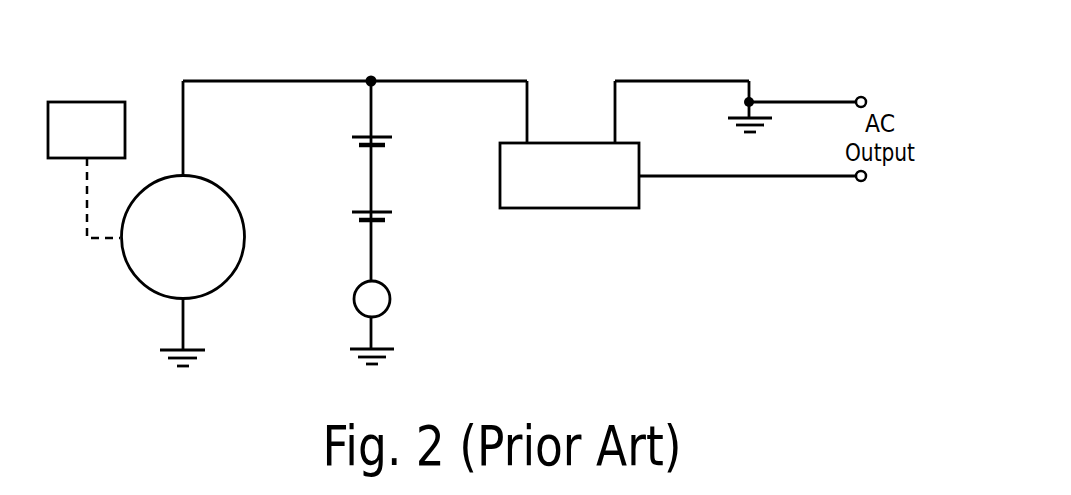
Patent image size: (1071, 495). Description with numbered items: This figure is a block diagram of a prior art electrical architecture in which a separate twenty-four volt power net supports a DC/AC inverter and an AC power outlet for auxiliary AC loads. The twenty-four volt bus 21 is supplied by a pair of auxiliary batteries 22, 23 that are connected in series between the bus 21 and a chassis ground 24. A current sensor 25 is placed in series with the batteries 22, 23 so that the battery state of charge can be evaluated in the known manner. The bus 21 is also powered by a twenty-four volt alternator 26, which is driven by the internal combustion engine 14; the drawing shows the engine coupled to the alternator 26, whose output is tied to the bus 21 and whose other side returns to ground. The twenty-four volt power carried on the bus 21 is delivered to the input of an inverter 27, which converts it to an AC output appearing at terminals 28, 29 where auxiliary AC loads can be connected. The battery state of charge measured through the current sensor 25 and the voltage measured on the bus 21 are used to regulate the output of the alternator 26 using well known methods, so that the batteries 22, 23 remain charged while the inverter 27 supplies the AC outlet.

The internal combustion engine 14 is at (100, 101).
The 24V bus 21 is at (422, 81).
The auxiliary battery 22 is at (365, 137).
The auxiliary battery 23 is at (365, 210).
The chassis ground 24 is at (387, 348).
The current sensor 25 is at (355, 290).
The 24V alternator 26 is at (220, 290).
The inverter 27 is at (499, 162).
The AC output terminal 28 is at (860, 183).
The AC output terminal 29 is at (867, 93).